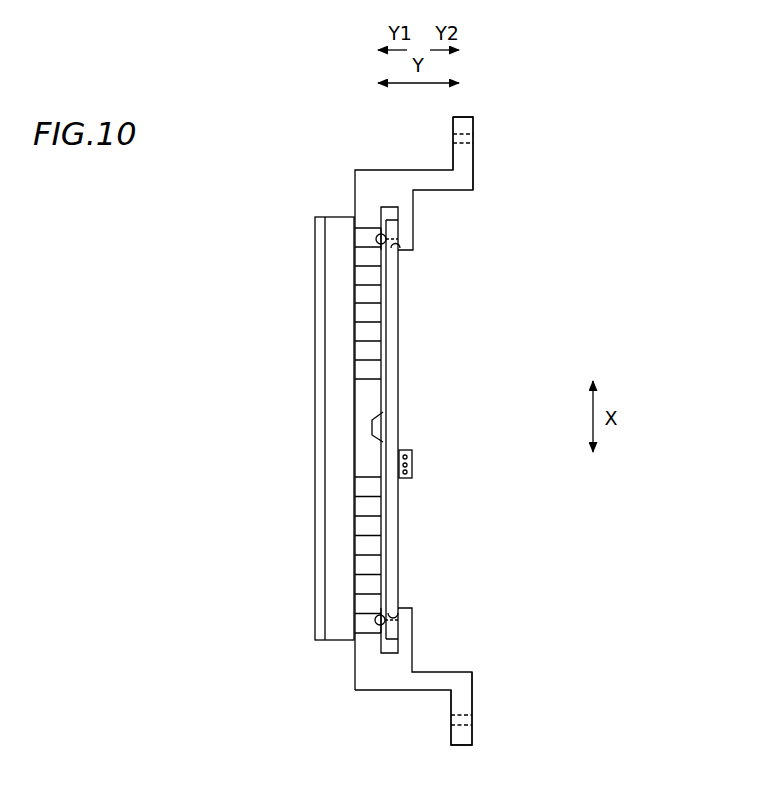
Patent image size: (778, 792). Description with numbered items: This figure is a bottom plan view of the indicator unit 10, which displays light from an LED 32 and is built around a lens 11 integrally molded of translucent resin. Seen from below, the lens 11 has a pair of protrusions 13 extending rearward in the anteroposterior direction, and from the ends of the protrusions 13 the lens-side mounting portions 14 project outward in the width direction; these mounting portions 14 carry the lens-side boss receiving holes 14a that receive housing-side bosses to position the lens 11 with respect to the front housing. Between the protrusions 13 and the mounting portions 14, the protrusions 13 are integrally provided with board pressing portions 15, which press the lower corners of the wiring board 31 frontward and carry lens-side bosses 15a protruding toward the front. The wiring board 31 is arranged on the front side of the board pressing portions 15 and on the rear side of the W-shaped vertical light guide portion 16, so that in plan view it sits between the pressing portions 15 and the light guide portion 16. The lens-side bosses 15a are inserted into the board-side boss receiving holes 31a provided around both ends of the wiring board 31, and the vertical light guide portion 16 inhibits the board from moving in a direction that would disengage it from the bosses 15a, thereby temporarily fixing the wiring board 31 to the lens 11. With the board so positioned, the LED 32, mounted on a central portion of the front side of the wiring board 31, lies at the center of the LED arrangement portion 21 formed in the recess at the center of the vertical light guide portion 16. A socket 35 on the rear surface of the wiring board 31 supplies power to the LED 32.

The indicator unit 10 is at (581, 158).
The lens 11 is at (309, 251).
The protrusions 13 is at (428, 178).
The lens-side mounting portions 14 is at (473, 123).
The lens-side boss receiving holes 14a is at (475, 140).
The board pressing portions 15 is at (405, 215).
The lens-side bosses 15a is at (376, 232).
The vertical light guide portion 16 is at (368, 542).
The LED arrangement portion 21 is at (364, 424).
The wiring board 31 is at (393, 312).
The board-side boss receiving holes 31a is at (398, 241).
The LED 32 is at (373, 427).
The socket 35 is at (412, 463).